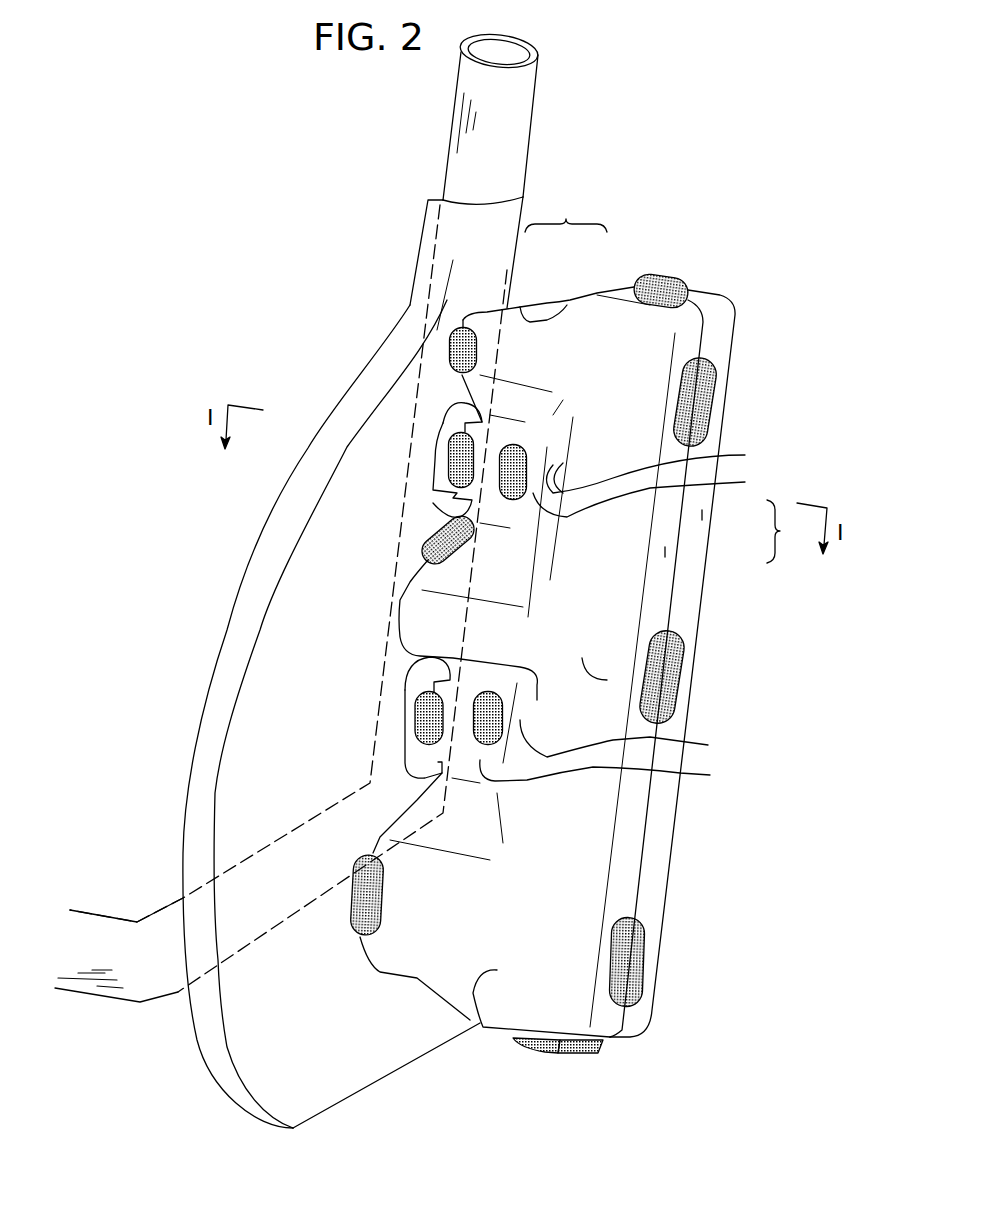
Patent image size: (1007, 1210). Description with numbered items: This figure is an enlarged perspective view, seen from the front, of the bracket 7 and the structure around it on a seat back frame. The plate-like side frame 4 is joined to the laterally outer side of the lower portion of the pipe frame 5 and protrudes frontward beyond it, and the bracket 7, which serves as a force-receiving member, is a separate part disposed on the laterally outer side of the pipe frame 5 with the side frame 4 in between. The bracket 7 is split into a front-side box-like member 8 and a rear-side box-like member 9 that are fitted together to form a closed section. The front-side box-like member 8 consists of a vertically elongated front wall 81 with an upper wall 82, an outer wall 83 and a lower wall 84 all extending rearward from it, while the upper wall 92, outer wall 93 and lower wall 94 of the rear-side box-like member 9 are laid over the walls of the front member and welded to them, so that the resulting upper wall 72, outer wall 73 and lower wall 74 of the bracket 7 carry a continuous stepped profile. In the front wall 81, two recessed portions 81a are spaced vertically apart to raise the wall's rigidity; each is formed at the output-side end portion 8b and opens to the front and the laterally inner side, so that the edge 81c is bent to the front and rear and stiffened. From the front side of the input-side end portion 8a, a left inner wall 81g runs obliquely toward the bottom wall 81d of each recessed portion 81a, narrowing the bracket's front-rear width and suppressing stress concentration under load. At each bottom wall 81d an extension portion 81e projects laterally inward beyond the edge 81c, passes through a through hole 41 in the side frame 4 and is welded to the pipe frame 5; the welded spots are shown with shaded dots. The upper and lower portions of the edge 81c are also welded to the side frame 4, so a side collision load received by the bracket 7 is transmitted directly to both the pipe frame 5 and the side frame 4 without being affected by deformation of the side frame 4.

The side frame 4 is at (293, 1080).
The pipe frame 5 is at (533, 108).
The bracket 7 is at (715, 271).
The front-side box-like member 8 is at (636, 897).
The rear-side box-like member 9 is at (656, 970).
The through hole 41 is at (455, 398).
The upper wall 72 is at (566, 212).
The outer wall 73 is at (790, 531).
The lower wall 74 is at (566, 1093).
The front wall 81 is at (480, 1027).
The upper wall 82 is at (527, 317).
The outer wall 83 is at (665, 552).
The lower wall 84 is at (510, 1040).
The upper wall 92 is at (552, 308).
The outer wall 93 is at (702, 515).
The lower wall 94 is at (623, 1037).
The input-side end portion 8a is at (607, 680).
The output-side end portion 8b is at (393, 600).
The recessed portion 81a is at (510, 545).
The edge 81c is at (427, 612).
The bottom wall 81d is at (634, 631).
The extension portion 81e is at (457, 493).
The left inner wall 81g is at (655, 602).